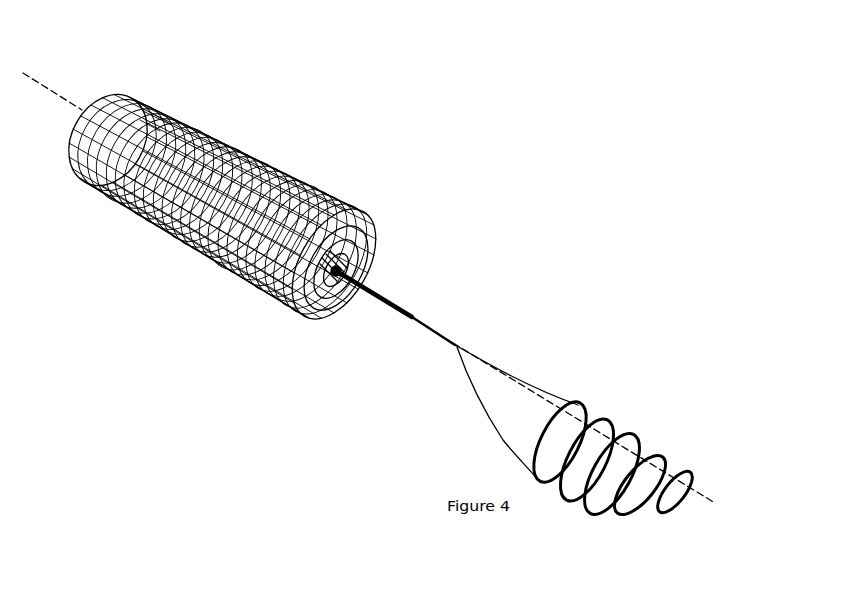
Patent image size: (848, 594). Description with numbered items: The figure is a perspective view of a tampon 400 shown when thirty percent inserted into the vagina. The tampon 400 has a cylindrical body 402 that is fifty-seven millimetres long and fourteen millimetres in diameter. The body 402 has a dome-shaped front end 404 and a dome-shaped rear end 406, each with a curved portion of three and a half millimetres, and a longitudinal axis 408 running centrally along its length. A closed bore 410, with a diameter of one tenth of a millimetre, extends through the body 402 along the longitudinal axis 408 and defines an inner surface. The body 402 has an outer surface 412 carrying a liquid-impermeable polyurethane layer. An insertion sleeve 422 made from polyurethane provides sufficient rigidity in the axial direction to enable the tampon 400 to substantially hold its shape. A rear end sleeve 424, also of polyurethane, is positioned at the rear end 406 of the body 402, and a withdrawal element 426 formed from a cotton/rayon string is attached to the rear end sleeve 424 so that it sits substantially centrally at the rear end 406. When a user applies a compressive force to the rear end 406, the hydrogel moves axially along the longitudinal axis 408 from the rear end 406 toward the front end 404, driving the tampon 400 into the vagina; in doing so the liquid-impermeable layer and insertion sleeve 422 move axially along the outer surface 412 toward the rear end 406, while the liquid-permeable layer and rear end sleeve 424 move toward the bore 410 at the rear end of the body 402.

The tampon 400 is at (205, 293).
The cylindrical body 402 is at (243, 143).
The front end 404 is at (120, 90).
The rear end 406 is at (388, 250).
The longitudinal axis 408 is at (495, 370).
The bore 410 is at (347, 308).
The outer surface 412 is at (187, 218).
The insertion sleeve 422 is at (152, 124).
The rear end sleeve 424 is at (340, 262).
The withdrawal element 426 is at (607, 408).